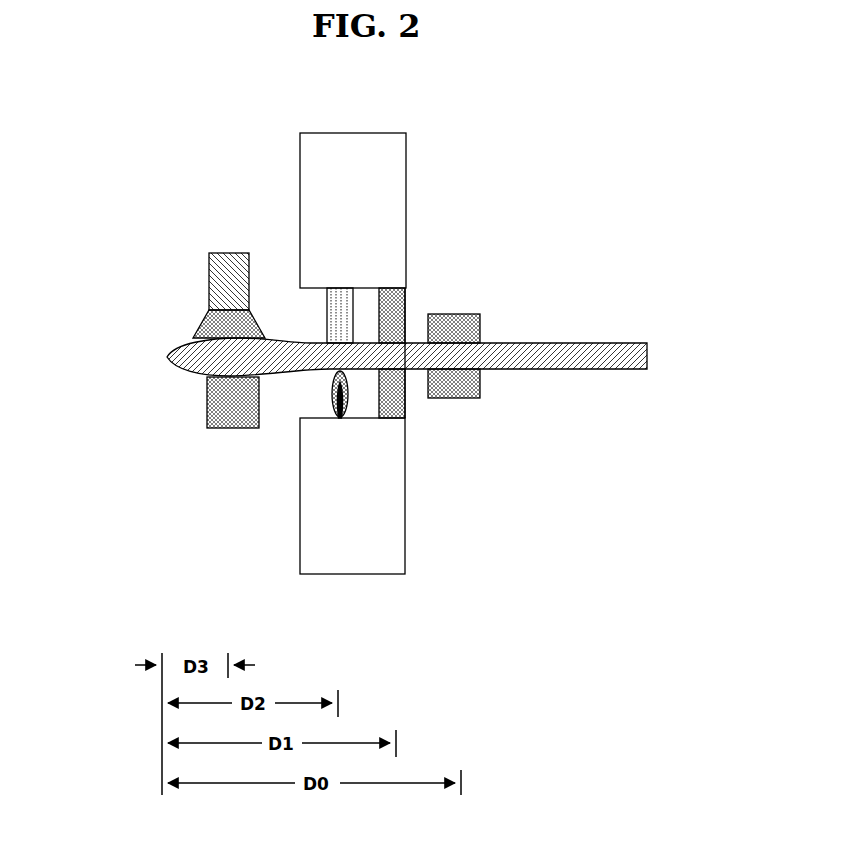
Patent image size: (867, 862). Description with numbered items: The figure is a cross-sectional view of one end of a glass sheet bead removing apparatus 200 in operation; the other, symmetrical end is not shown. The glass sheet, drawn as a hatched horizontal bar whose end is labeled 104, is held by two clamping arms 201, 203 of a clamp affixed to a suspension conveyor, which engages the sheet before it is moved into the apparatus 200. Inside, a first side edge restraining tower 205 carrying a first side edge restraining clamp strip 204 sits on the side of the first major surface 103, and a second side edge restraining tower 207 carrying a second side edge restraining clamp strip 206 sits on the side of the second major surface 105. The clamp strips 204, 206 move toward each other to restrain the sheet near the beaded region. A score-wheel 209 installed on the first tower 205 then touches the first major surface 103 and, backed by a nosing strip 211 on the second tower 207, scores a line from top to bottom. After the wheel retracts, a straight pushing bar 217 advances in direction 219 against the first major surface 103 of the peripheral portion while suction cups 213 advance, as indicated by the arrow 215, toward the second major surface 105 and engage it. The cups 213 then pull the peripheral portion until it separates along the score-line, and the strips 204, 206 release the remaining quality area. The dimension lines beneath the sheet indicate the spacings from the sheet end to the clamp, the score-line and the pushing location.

The glass sheet bead removing apparatus 200 is at (495, 103).
The first major surface 103 is at (570, 370).
The tip of elongated member 104 is at (172, 360).
The second major surface 105 is at (515, 343).
The clamping arm 201 is at (458, 398).
The clamping arm 203 is at (450, 320).
The first side edge restraining clamp strip 204 is at (400, 405).
The first side edge restraining tower 205 is at (357, 548).
The second side edge restraining clamp strip 206 is at (398, 303).
The second side edge restraining tower 207 is at (357, 158).
The score-wheel 209 is at (337, 402).
The nosing strip 211 is at (327, 322).
The suction cups 213 is at (228, 313).
The upper pad displacement 215 is at (230, 269).
The pushing bar 217 is at (228, 420).
The direction 219 is at (233, 436).